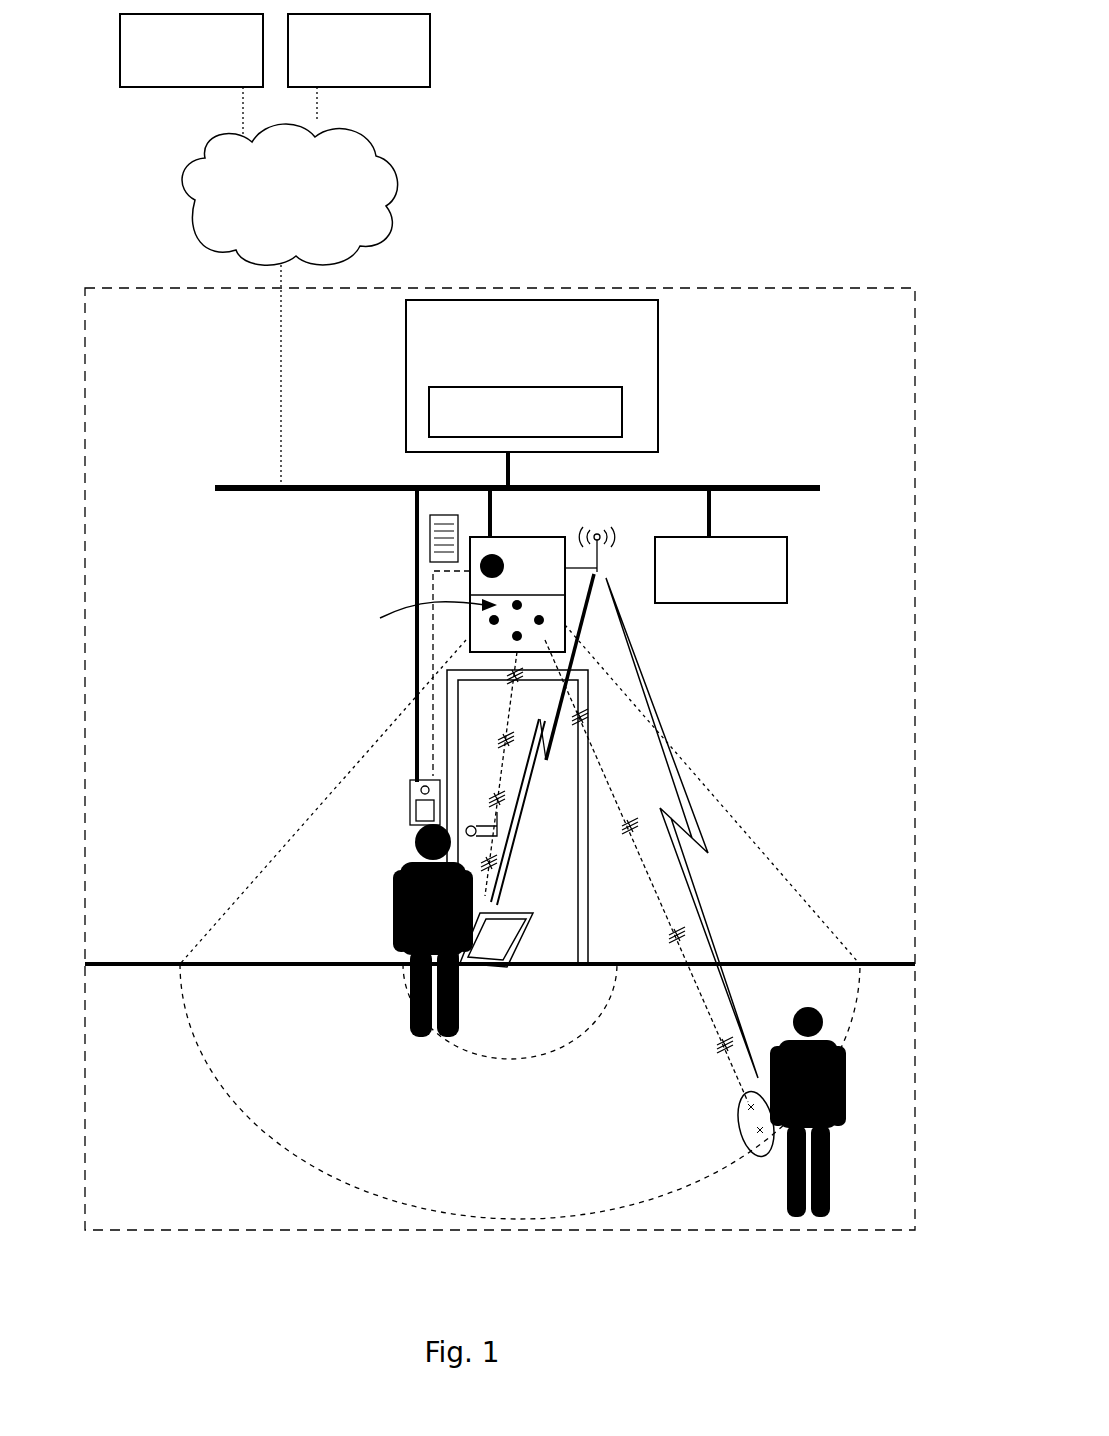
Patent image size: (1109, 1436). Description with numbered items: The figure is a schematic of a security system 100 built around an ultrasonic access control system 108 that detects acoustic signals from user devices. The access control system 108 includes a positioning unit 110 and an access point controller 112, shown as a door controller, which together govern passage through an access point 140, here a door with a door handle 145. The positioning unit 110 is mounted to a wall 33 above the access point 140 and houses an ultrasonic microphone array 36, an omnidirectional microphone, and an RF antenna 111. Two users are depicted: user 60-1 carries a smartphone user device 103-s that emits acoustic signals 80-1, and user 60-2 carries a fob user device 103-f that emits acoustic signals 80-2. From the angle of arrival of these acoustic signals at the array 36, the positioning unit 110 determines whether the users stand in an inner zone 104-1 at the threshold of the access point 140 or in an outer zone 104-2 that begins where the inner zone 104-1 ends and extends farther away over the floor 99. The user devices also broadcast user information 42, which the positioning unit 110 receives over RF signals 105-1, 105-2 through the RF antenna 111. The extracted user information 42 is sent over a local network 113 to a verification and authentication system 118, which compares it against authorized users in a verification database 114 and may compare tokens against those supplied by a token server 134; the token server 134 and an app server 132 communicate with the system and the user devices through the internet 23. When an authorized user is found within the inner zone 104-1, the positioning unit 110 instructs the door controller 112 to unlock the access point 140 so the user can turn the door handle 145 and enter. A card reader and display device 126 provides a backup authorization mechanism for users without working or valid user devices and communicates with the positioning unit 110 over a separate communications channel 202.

The security system 100 is at (782, 68).
The ultrasonic access control system 108 is at (225, 1232).
The token server 134 is at (191, 75).
The app server 132 is at (359, 68).
The internet 23 is at (290, 305).
The verification and authentication system 118 is at (532, 393).
The verification database 114 is at (525, 412).
The local network 113 is at (753, 485).
The access point controller 112 is at (787, 560).
The wall 33 is at (292, 636).
The positioning unit 110 is at (546, 537).
The RF antenna 111 is at (602, 567).
The user information 42 is at (430, 521).
The communications channel 202 is at (430, 583).
The ultrasonic microphone array 36 is at (421, 618).
The access point 140 is at (579, 928).
The door handle 145 is at (482, 810).
The card reader and display device 126 is at (409, 820).
The floor 99 is at (500, 979).
The outer zone 104-2 is at (853, 1023).
The inner zone 104-1 is at (593, 1025).
The acoustic signals 80-1 is at (510, 700).
The acoustic signals 80-2 is at (700, 985).
The RF signals 105-1 is at (547, 770).
The RF signals 105-2 is at (660, 688).
The user 60-1 is at (396, 897).
The user device 103-s is at (482, 966).
The user 60-2 is at (786, 1170).
The user device 103-f is at (739, 1118).